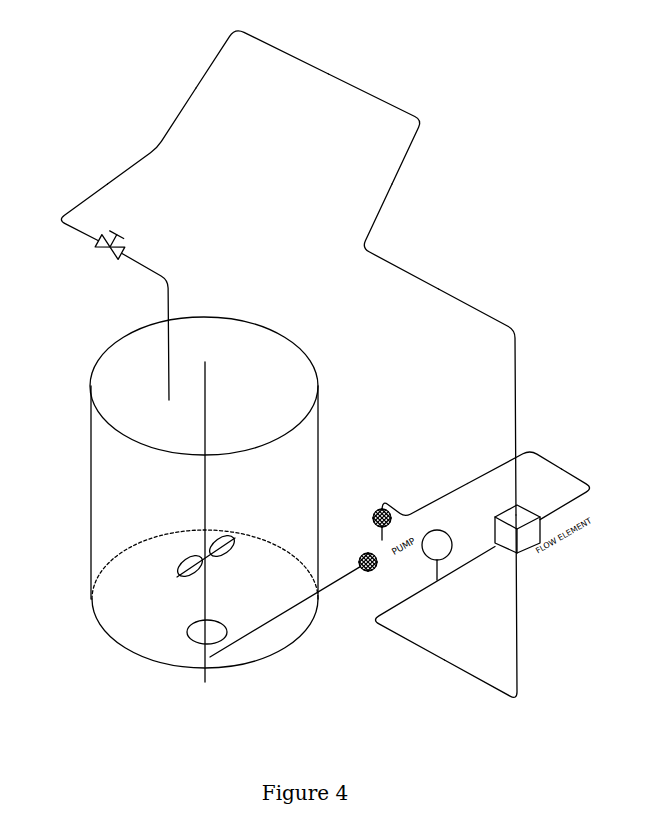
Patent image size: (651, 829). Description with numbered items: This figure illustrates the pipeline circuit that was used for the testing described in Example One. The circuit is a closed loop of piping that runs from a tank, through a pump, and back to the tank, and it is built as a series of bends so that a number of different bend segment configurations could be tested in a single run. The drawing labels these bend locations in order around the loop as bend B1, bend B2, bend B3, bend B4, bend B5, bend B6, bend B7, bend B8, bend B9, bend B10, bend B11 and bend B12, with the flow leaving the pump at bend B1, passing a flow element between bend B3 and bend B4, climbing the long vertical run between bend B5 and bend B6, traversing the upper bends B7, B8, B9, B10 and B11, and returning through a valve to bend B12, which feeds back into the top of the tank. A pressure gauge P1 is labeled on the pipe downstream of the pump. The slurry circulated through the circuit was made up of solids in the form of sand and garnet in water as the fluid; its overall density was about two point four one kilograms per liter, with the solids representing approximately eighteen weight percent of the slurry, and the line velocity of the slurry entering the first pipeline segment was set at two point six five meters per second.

The pipe bend B1 (pump discharge) B1 is at (425, 500).
The pipe bend B2 is at (515, 453).
The pipe bend B3 is at (578, 488).
The pipe bend B4 is at (435, 604).
The pipe bend B5 is at (490, 619).
The pipe bend B6 is at (478, 402).
The pipe bend B7 is at (401, 236).
The pipe bend B8 is at (374, 129).
The pipe bend B9 is at (262, 59).
The pipe bend B10 is at (152, 136).
The pipe bend B11 is at (84, 212).
The pipe bend B12 (tank inlet) B12 is at (162, 327).
The pressure gauge P1 is at (437, 555).